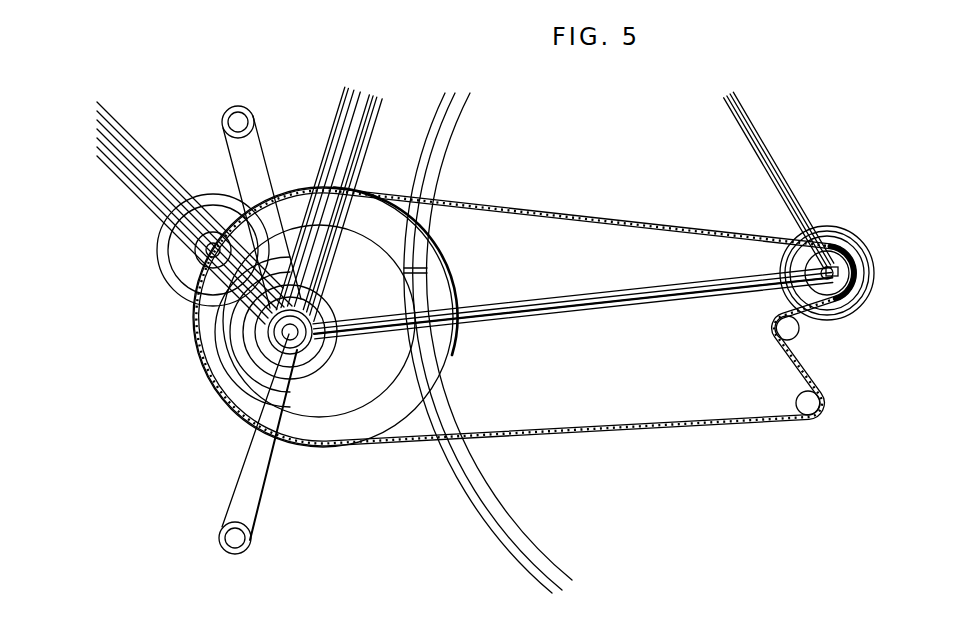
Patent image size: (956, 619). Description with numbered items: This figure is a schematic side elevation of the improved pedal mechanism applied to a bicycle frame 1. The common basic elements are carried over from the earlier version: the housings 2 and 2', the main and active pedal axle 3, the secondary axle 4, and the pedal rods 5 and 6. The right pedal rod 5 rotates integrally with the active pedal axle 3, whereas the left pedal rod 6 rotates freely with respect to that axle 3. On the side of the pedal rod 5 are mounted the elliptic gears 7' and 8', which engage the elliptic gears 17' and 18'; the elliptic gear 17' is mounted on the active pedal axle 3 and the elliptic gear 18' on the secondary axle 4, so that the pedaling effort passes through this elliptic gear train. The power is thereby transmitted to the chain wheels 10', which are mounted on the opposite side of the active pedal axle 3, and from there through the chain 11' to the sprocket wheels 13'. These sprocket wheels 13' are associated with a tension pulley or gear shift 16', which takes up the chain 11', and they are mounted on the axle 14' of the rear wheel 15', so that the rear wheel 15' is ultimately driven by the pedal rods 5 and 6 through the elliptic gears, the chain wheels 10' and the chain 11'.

The frame 1 is at (366, 104).
The housing 2 is at (229, 360).
The housing 2' is at (168, 276).
The main and active pedal axle 3 is at (292, 338).
The secondary axle 4 is at (198, 207).
The pedal rod 5 is at (247, 147).
The pedal rod 6 is at (253, 480).
The elliptic gear 7' is at (232, 332).
The elliptic gear 8' is at (255, 378).
The chain wheel 10' is at (353, 317).
The chain 11' is at (525, 335).
The sprocket wheel 13' is at (827, 231).
The axle 14' is at (769, 232).
The rear wheel 15' is at (488, 343).
The tension pulley or gear shift 16' is at (818, 365).
The elliptic gear 17' is at (176, 249).
The elliptic gear 18' is at (183, 250).